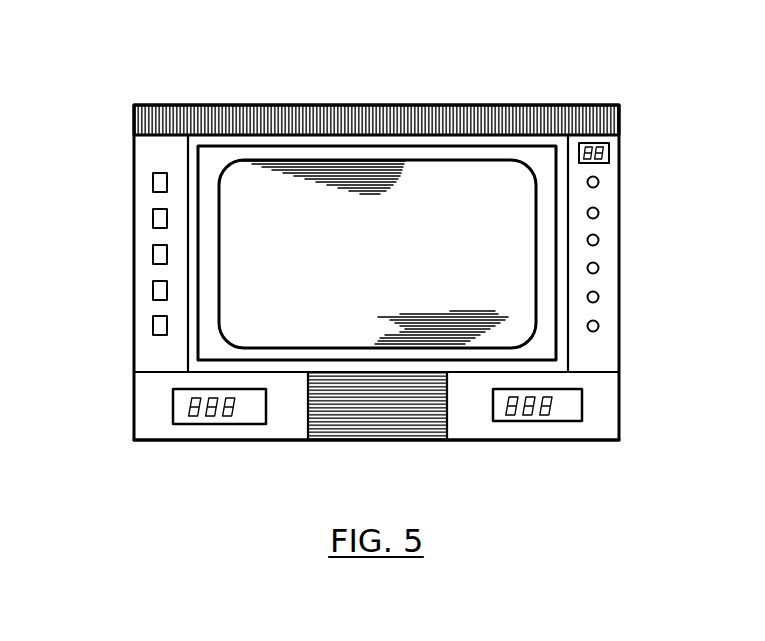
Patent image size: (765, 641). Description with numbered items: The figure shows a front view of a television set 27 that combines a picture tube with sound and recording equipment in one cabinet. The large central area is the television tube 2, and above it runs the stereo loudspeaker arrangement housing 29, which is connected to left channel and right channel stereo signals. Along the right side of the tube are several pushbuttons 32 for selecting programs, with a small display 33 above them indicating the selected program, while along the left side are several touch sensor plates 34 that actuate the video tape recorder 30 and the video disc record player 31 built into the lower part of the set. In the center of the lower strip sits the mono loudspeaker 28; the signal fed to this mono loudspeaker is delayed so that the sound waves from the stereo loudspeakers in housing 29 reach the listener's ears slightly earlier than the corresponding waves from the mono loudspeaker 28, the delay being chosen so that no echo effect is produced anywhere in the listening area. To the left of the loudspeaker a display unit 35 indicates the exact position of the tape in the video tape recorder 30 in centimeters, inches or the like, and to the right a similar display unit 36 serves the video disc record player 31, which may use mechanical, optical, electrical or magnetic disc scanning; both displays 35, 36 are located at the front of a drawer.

The television set 27 is at (563, 82).
The stereo loudspeaker arrangement housing 29 is at (292, 105).
The video tape recorder 30 is at (156, 432).
The video disc record player 31 is at (610, 392).
The television tube 2 is at (222, 342).
The touch sensor plates 34 is at (158, 185).
The pushbuttons 32 is at (599, 326).
The display 33 is at (610, 151).
The display unit 35 is at (232, 424).
The display unit 36 is at (540, 421).
The mono loudspeaker 28 is at (377, 440).